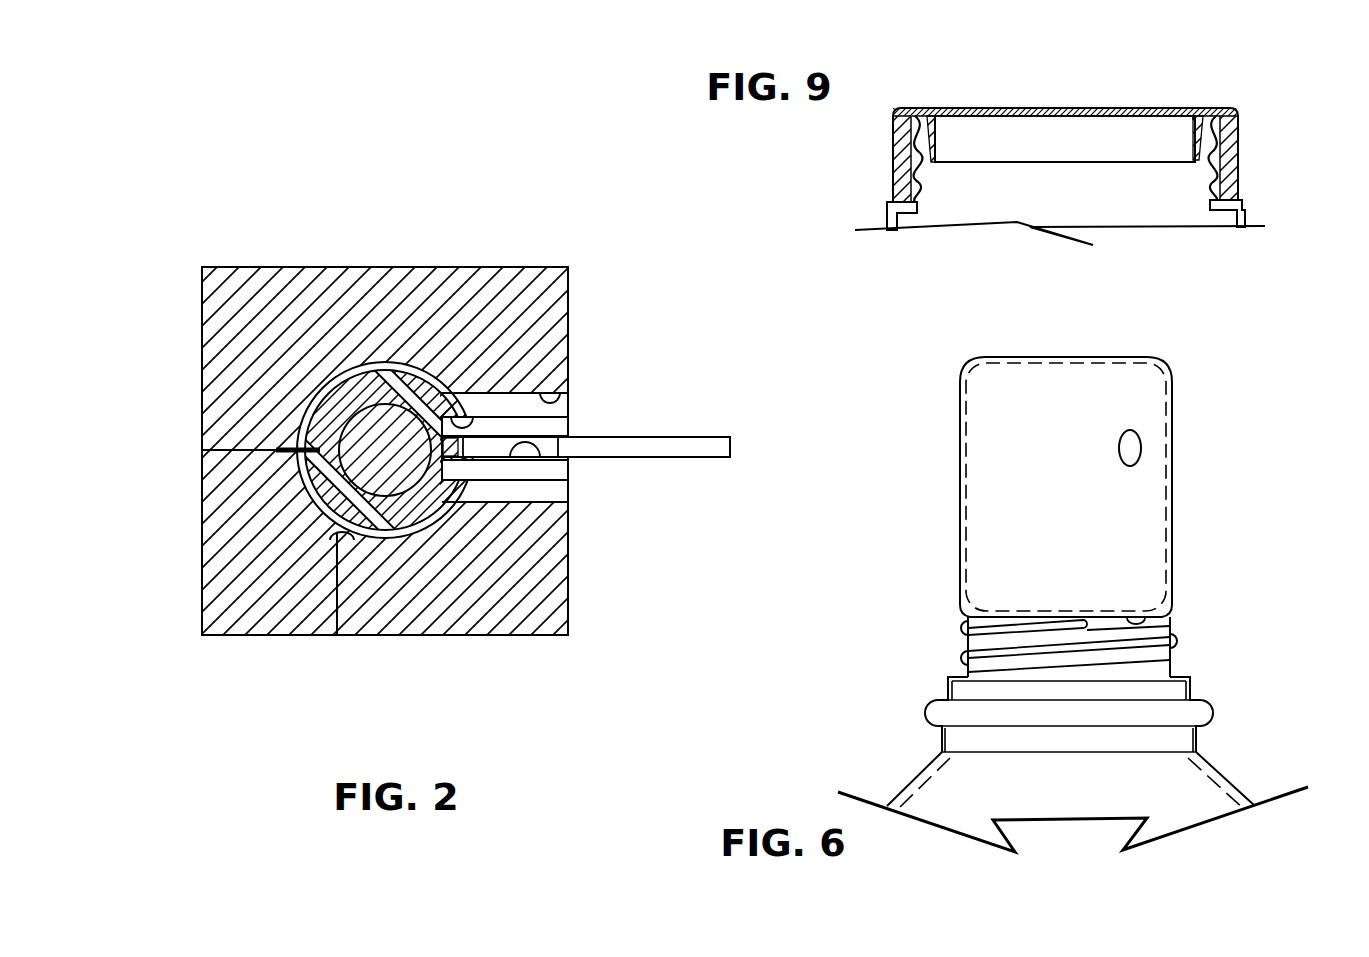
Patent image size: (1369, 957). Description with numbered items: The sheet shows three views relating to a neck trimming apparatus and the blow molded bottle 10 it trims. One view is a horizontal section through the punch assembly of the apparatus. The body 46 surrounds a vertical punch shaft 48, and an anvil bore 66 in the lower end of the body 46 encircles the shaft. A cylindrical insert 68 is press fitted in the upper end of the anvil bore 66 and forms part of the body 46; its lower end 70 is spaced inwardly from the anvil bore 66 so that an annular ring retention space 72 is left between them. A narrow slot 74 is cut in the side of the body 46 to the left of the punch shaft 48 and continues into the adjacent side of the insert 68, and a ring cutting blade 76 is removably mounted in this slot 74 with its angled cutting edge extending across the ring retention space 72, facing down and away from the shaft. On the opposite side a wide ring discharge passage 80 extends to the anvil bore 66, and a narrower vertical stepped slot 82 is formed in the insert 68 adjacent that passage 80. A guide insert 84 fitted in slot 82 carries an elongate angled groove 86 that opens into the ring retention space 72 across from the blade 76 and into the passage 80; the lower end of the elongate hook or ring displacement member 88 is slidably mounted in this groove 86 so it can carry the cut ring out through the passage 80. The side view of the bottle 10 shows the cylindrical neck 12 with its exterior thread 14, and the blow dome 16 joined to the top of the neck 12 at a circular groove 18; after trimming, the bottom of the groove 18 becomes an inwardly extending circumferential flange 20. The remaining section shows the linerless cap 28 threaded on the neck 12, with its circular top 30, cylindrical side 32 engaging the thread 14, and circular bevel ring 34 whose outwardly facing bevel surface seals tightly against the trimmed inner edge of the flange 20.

In FIG. 9, the bottle 10 is at (1256, 221).
In FIG. 6, the bottle 10 is at (1258, 597).
In FIG. 9, the neck 12 is at (918, 168).
In FIG. 6, the neck 12 is at (967, 645).
In FIG. 6, the exterior thread 14 is at (1178, 642).
In FIG. 6, the blow dome 16 is at (1173, 395).
In FIG. 6, the circular groove 18 is at (973, 612).
In FIG. 9, the circumferential flange 20 is at (1203, 118).
In FIG. 6, the circumferential flange 20 is at (1127, 618).
In FIG. 9, the linerless cap 28 is at (1240, 105).
In FIG. 9, the circular top 30 is at (1076, 108).
In FIG. 9, the cylindrical side 32 is at (1240, 150).
In FIG. 9, the circular ring 34 is at (940, 128).
In FIG. 2, the body 46 is at (248, 266).
In FIG. 2, the punch shaft 48 is at (370, 430).
In FIG. 2, the anvil bore 66 is at (336, 636).
In FIG. 2, the cylindrical insert 68 is at (383, 362).
In FIG. 2, the lower end of insert 70 is at (347, 362).
In FIG. 2, the annular ring retention space 72 is at (440, 522).
In FIG. 2, the narrow slot 74 is at (262, 450).
In FIG. 2, the ring cutting blade 76 is at (352, 517).
In FIG. 2, the ring discharge passage 80 is at (570, 397).
In FIG. 2, the vertical stepped slot 82 is at (468, 412).
In FIG. 2, the guide insert 84 is at (560, 426).
In FIG. 2, the angled groove 86 is at (540, 458).
In FIG. 2, the ring displacement member 88 is at (665, 436).